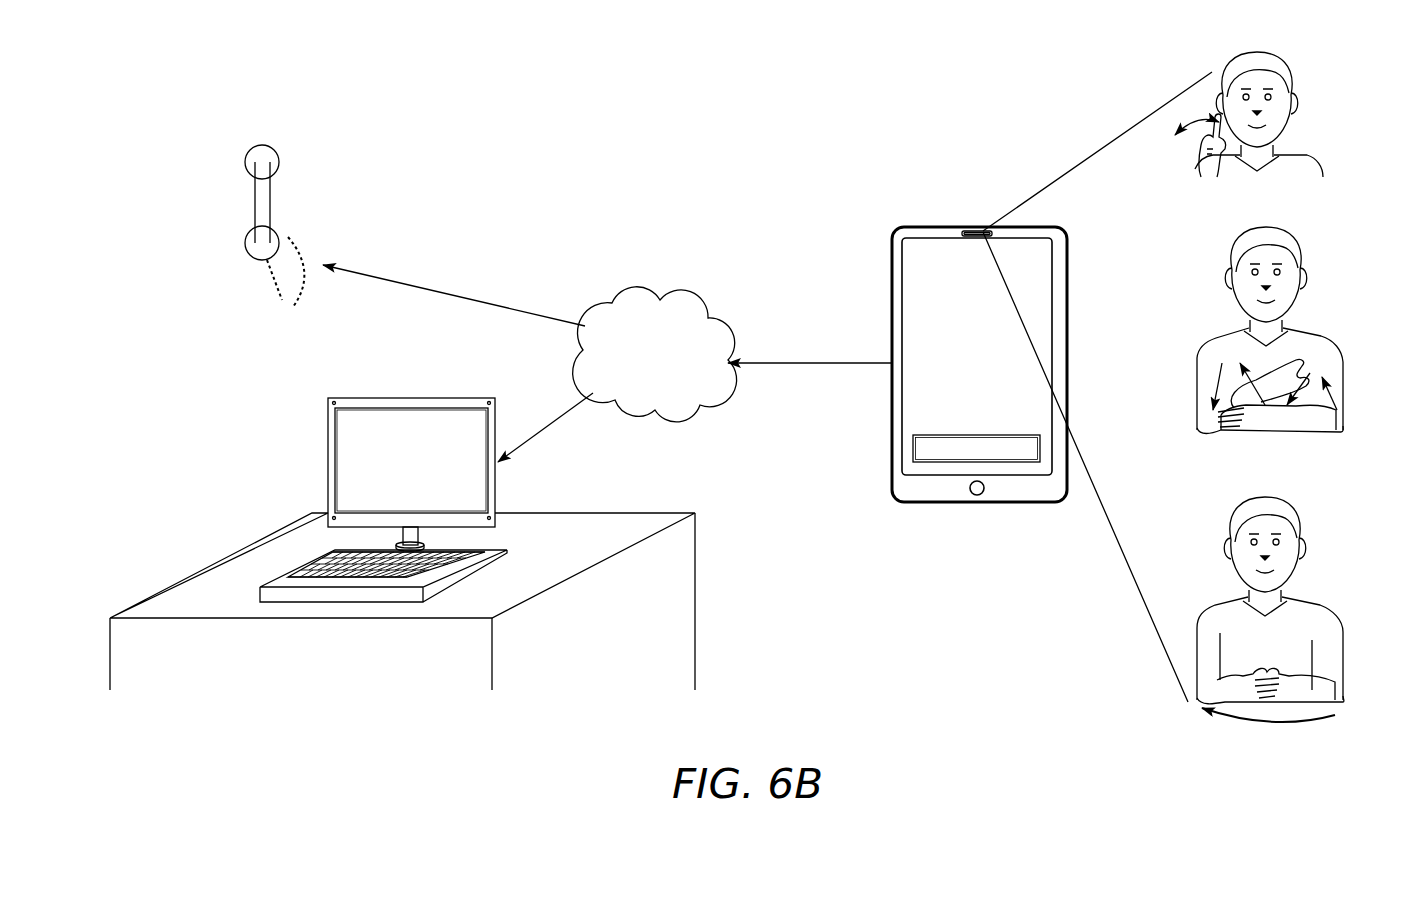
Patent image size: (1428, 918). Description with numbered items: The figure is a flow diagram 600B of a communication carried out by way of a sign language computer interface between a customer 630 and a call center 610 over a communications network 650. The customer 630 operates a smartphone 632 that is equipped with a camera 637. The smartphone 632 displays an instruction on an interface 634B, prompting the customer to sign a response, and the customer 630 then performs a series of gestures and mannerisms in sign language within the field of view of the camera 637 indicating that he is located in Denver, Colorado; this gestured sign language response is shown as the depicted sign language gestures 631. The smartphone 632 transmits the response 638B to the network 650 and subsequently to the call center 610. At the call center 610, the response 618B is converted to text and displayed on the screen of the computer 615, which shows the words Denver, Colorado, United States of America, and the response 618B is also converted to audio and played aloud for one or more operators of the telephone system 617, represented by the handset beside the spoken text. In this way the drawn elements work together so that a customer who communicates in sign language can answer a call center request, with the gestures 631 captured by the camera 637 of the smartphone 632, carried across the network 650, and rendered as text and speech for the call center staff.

The flow diagram 600B is at (818, 155).
The call center 610 is at (243, 413).
The computer 615 is at (411, 397).
The telephone system 617 is at (376, 153).
The response 618B is at (465, 297).
The communications network 650 is at (645, 292).
The response 638B is at (810, 363).
The smartphone 632 is at (1014, 343).
The camera 637 is at (993, 236).
The interface 634B is at (1048, 348).
The customer 630 is at (1205, 53).
The sign language gestures 631 is at (1312, 237).